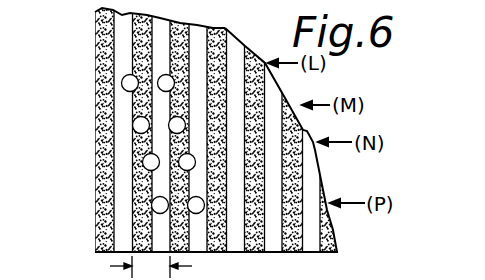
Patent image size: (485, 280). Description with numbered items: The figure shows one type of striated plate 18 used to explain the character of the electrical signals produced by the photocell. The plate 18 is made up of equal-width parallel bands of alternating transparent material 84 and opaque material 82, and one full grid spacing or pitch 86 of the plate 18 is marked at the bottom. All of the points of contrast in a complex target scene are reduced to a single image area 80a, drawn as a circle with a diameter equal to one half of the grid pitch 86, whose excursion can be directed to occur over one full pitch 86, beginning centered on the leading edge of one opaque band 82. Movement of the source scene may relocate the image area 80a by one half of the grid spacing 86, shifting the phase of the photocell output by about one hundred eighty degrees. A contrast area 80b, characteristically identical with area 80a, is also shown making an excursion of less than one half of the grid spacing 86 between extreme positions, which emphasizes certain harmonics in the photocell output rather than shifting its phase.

The opaque material 82 is at (135, 43).
The plate 18 is at (224, 28).
The transparent material 84 is at (232, 56).
The image area 80a is at (122, 86).
The contrast area 80b is at (133, 127).
The grid spacing 86 is at (151, 267).